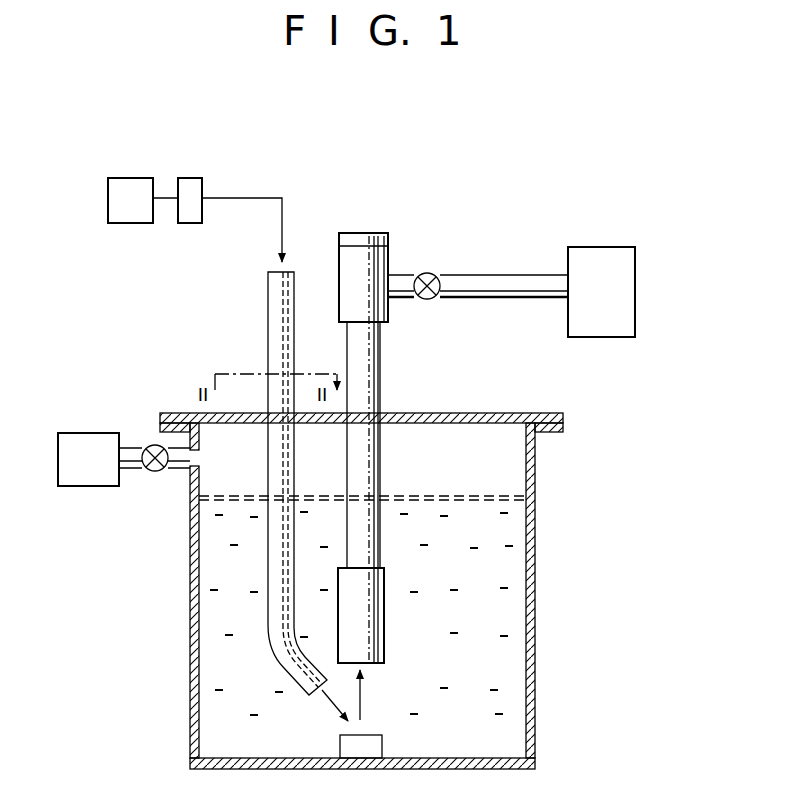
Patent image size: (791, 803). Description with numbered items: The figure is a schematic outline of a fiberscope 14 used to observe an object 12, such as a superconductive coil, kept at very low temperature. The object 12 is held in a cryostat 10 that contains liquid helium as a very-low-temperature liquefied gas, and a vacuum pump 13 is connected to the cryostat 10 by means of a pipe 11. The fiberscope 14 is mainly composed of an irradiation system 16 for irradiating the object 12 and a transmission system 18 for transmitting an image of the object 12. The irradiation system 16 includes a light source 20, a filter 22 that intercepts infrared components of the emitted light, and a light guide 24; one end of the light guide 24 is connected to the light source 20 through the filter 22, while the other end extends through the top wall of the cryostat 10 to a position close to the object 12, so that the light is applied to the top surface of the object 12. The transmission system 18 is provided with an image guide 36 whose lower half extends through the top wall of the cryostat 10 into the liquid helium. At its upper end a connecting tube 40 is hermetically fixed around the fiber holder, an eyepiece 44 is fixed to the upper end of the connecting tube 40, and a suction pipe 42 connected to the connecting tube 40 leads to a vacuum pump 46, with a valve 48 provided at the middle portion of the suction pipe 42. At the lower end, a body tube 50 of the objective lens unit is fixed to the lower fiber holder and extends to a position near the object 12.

The cryostat 10 is at (535, 553).
The pipe 11 is at (172, 470).
The object 12 is at (370, 735).
The vacuum pump 13 is at (86, 433).
The fiberscope 14 is at (332, 202).
The irradiation system 16 is at (268, 496).
The transmission system 18 is at (398, 384).
The light source 20 is at (136, 178).
The filter 22 is at (202, 178).
The light guide 24 is at (270, 328).
The image guide 36 is at (396, 465).
The connecting tube 40 is at (343, 278).
The suction pipe 42 is at (496, 280).
The eyepiece 44 is at (378, 236).
The vacuum pump 46 is at (607, 252).
The valve 48 is at (427, 272).
The body tube 50 is at (385, 637).